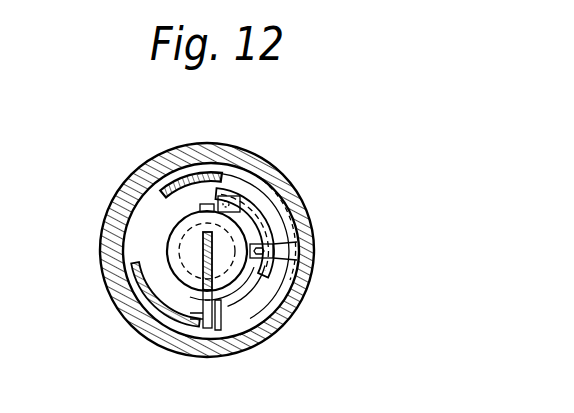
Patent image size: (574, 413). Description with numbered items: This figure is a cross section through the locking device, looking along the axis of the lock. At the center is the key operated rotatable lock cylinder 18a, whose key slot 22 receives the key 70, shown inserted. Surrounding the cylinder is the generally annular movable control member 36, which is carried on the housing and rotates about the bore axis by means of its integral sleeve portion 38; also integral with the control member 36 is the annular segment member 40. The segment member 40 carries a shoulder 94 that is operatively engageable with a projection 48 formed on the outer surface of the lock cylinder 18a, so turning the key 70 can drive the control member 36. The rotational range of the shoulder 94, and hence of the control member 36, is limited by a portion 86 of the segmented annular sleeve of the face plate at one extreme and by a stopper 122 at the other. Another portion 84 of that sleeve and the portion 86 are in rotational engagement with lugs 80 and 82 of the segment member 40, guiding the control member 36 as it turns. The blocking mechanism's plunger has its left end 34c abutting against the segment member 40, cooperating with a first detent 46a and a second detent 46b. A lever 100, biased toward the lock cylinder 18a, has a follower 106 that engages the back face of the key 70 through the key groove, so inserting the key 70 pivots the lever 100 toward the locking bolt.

The lug 80 is at (156, 163).
The portion of the segmented annular sleeve 86 is at (178, 170).
The projection 48 is at (208, 164).
The movable control member 36 is at (247, 147).
The sleeve portion 38 is at (260, 175).
The second detent 46b is at (283, 177).
The annular segment member 40 is at (278, 203).
The shoulder 94 is at (298, 241).
The first detent 46a is at (300, 252).
The left end of the plunger 34c is at (304, 262).
The lock cylinder 18a is at (293, 290).
The follower 106 is at (272, 325).
The stopper 122 is at (245, 338).
The lever 100 is at (210, 332).
The lug 82 is at (199, 332).
The portion of the segmented annular sleeve 84 is at (160, 343).
The key 70 is at (200, 240).
The key slot 22 is at (205, 241).